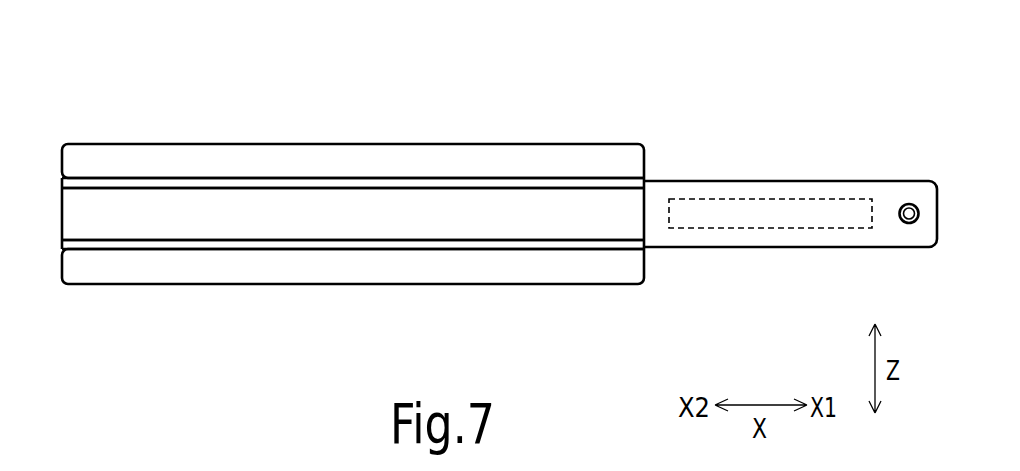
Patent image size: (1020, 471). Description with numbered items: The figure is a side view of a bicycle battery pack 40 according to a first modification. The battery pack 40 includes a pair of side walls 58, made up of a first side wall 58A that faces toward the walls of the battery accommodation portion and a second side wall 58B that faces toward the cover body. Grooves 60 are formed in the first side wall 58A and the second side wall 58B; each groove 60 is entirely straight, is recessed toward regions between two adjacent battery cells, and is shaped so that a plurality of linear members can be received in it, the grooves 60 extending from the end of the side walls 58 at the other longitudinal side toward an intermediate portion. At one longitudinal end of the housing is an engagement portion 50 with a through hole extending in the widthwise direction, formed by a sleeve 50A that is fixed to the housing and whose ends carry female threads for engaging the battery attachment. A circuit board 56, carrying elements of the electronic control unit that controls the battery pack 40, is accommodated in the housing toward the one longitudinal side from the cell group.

The battery pack 40 is at (808, 69).
The engagement portion 50 is at (909, 224).
The sleeve 50A is at (909, 203).
The circuit board 56 is at (780, 229).
The side walls 58 is at (353, 220).
The first side wall 58A is at (535, 162).
The second side wall 58B is at (538, 272).
The groove 60 is at (375, 183).